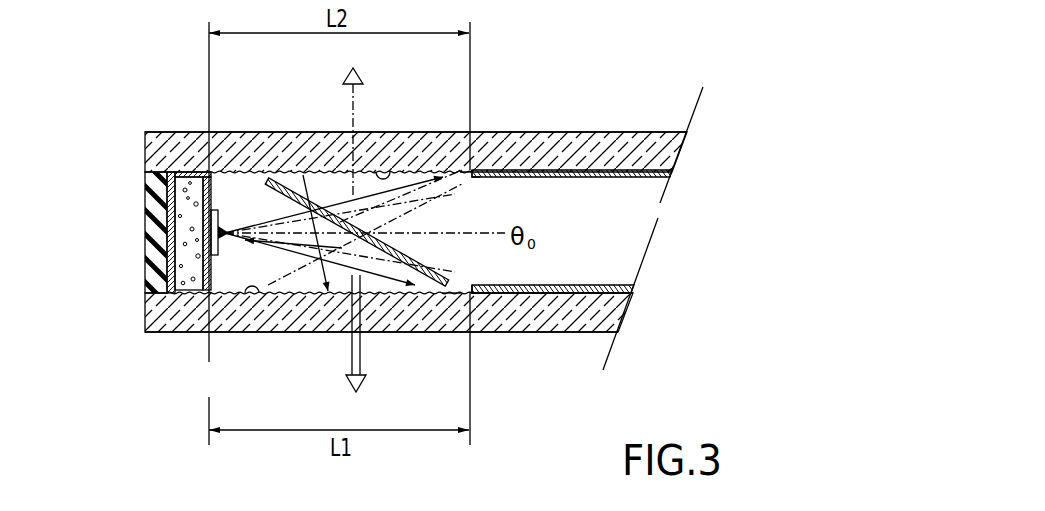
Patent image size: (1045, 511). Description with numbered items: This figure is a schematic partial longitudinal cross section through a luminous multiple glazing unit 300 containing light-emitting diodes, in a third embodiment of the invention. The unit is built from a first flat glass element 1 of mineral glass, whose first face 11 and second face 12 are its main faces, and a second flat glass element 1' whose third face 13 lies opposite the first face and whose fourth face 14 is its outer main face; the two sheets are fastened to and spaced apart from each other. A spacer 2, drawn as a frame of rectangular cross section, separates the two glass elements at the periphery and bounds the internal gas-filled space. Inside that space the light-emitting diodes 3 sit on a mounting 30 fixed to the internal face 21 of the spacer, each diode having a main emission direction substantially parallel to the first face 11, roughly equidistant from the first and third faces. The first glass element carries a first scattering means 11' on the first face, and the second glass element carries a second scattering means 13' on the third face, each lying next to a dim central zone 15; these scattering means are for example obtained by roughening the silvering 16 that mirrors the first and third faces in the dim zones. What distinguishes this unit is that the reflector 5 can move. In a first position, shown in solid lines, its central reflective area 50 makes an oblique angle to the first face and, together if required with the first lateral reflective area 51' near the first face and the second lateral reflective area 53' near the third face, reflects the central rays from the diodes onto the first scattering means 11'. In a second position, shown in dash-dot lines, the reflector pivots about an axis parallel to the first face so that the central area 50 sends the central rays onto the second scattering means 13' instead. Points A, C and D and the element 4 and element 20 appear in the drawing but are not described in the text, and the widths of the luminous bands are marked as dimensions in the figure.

The luminous multiple glazing unit 300 is at (668, 83).
The first flat glass element 1 is at (389, 344).
The second flat glass element 1' is at (416, 120).
The spacer 2 is at (183, 222).
The light-emitting diodes 3 is at (219, 246).
The absorbing wall 4 is at (146, 196).
The reflector 5 is at (309, 200).
The first face 11 is at (579, 310).
The first scattering means 11' is at (259, 342).
The second face 12 is at (570, 333).
The third face 13 is at (605, 161).
The second scattering means 13' is at (395, 124).
The fourth face 14 is at (620, 131).
The dim central zone 15 is at (500, 178).
The silvering 16 is at (640, 179).
The waveguide channel 20 is at (560, 220).
The internal face of the spacer 21 is at (212, 207).
The mounting 30 is at (207, 243).
The central reflective area 50 is at (345, 255).
The first lateral reflective area 51' is at (340, 315).
The second lateral reflective area 53' is at (340, 140).
The point A is at (450, 286).
The point C is at (474, 294).
The point D is at (470, 168).